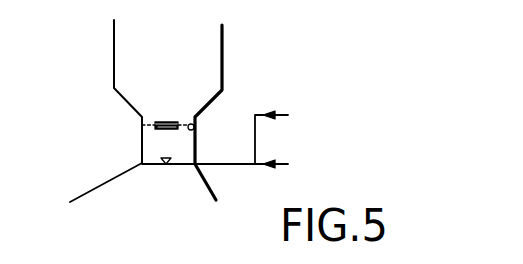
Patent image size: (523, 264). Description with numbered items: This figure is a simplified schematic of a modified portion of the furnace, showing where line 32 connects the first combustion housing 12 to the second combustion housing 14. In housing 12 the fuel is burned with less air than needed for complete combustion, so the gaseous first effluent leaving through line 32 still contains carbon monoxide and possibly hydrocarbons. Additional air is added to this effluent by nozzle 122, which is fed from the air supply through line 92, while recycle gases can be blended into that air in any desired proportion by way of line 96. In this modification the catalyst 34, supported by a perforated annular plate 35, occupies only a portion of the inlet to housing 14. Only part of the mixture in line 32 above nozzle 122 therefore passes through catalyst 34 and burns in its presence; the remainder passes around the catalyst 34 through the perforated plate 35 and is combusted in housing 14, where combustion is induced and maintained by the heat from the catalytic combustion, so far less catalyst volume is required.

The combustion housing 12 is at (80, 193).
The combustion housing 14 is at (222, 52).
The line 32 is at (142, 137).
The catalyst 34 is at (155, 122).
The perforated annular plate 35 is at (195, 126).
The line 92 is at (222, 165).
The line 96 is at (255, 140).
The nozzle 122 is at (142, 163).